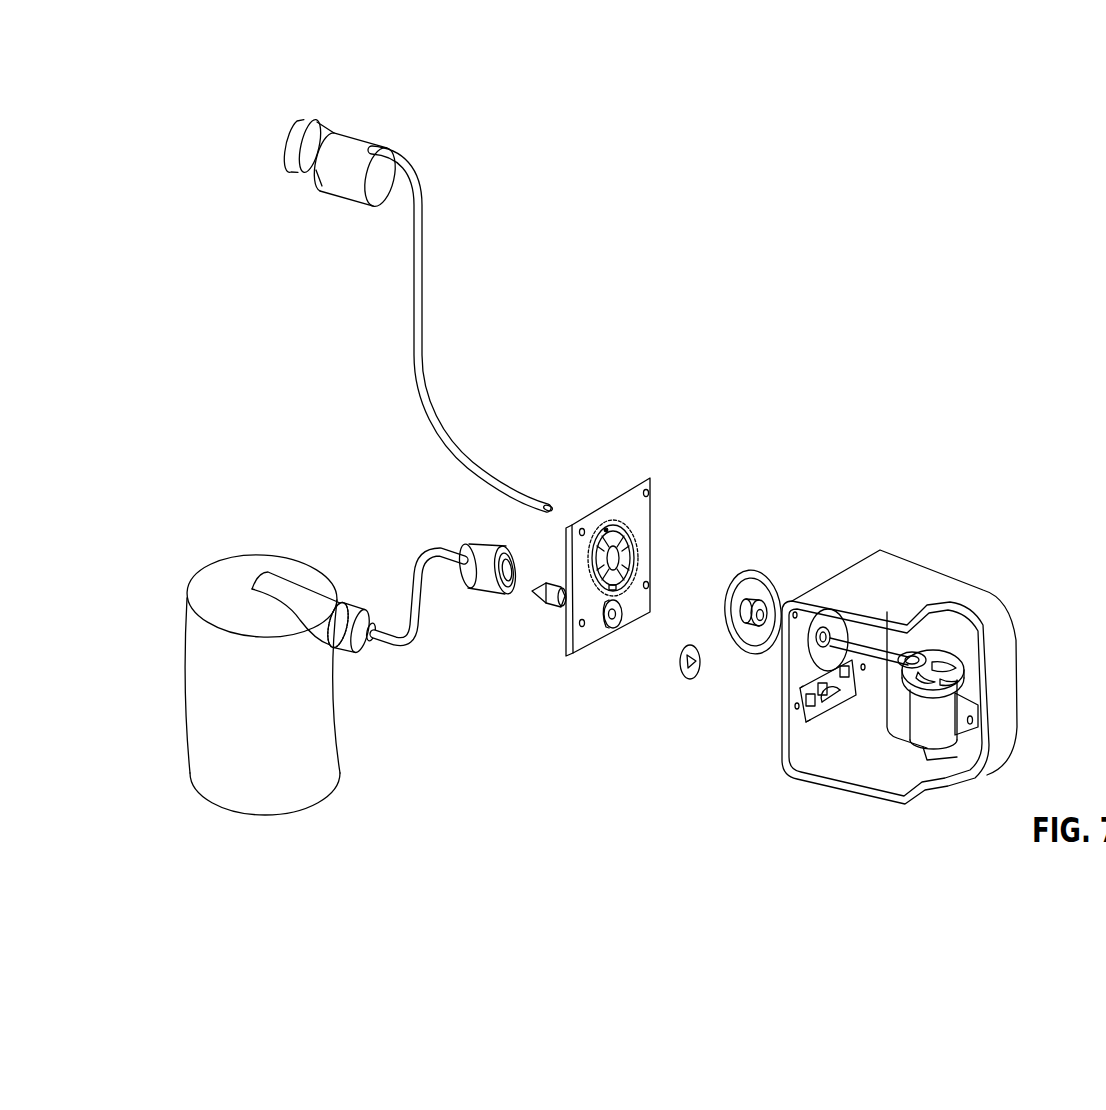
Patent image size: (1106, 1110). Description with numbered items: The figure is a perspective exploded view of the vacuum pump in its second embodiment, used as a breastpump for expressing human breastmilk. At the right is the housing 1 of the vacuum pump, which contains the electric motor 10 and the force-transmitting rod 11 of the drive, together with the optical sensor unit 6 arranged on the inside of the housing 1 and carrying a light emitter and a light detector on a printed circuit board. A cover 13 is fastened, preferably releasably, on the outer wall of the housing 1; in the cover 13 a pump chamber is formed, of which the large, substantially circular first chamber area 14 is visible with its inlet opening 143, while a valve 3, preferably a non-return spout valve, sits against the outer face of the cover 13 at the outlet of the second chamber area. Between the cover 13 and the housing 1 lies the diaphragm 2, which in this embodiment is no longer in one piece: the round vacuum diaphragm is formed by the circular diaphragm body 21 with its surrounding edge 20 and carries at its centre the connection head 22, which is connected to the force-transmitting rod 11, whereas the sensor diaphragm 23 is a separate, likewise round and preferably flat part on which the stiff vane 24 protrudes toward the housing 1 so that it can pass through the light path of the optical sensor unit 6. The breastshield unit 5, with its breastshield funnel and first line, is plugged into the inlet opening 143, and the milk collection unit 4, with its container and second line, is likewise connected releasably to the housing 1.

The housing 1 is at (928, 588).
The diaphragm 2 is at (769, 558).
The valve 3 is at (545, 608).
The milk collection unit 4 is at (252, 535).
The breastshield unit 5 is at (384, 120).
The optical sensor unit 6 is at (820, 735).
The electric motor 10 is at (937, 732).
The force-transmitting rod 11 is at (887, 652).
The cover 13 is at (627, 488).
The first chamber area 14 is at (626, 537).
The edge 20 is at (746, 583).
The diaphragm body 21 is at (745, 604).
The connection head 22 is at (764, 608).
The sensor diaphragm 23 is at (682, 668).
The vane 24 is at (698, 680).
The inlet opening 143 is at (606, 530).